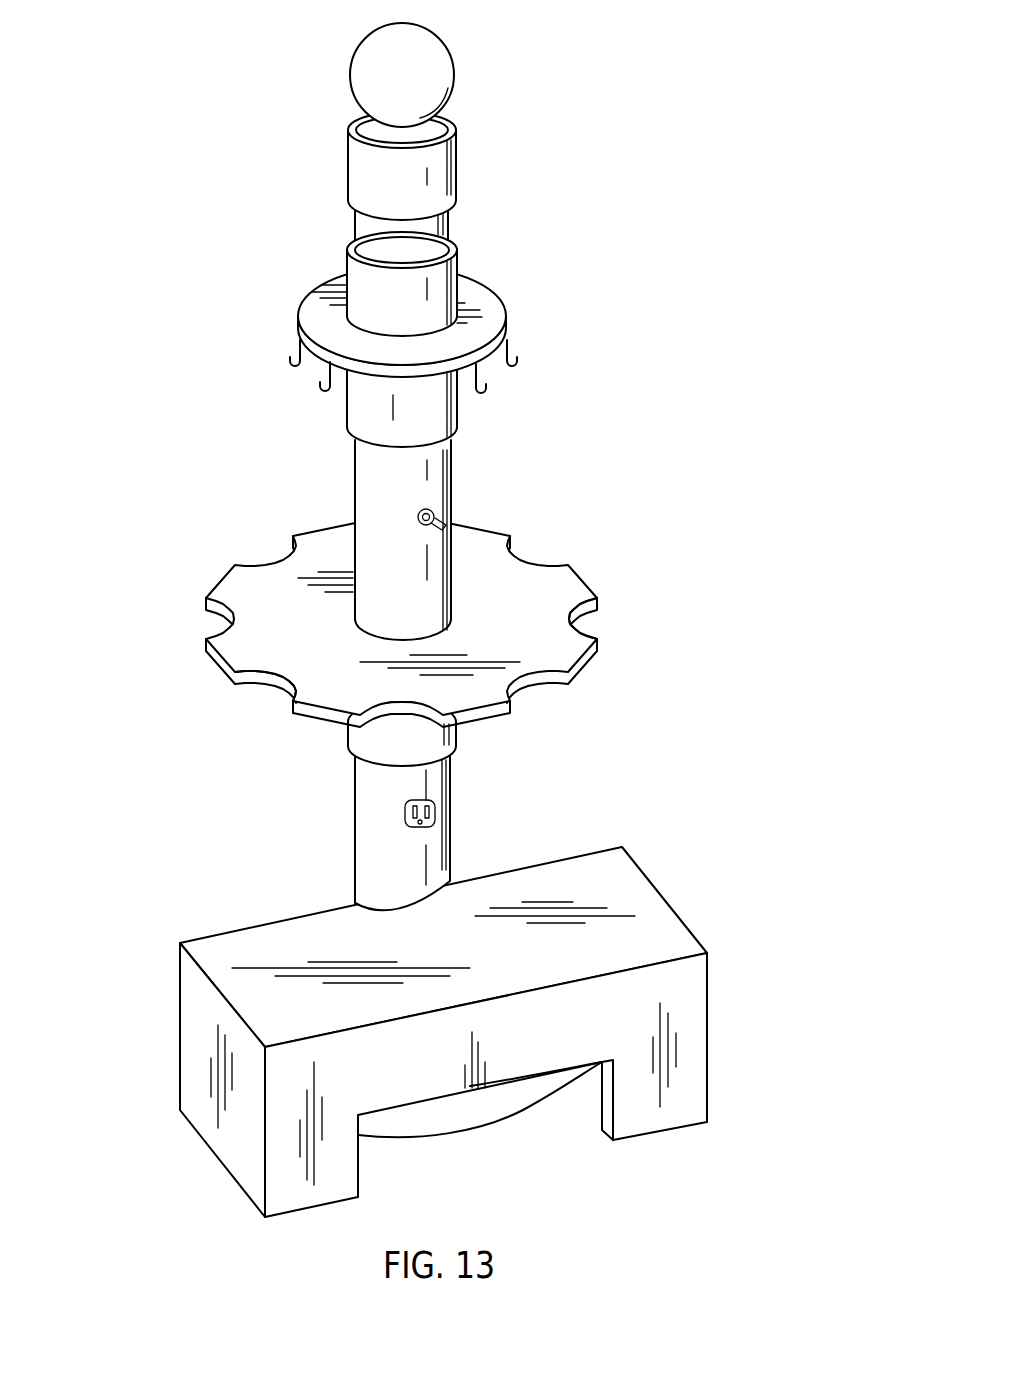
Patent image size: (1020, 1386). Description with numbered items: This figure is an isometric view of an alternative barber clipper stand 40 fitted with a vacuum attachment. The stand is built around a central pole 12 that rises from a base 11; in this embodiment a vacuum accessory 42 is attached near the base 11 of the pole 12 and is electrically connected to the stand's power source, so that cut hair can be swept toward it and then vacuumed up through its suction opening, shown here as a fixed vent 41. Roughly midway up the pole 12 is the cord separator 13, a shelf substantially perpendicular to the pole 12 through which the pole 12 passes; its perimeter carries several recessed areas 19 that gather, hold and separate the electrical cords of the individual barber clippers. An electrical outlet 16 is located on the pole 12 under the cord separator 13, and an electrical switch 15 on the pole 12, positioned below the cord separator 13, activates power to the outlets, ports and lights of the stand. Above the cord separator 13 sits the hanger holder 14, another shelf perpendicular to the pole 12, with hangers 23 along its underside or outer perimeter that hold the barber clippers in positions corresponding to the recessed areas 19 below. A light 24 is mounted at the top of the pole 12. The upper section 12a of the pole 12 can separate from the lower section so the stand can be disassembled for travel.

The barber clipper stand 40 is at (185, 150).
The light 24 is at (427, 72).
The hanger holder 14 is at (493, 284).
The hanger 23 is at (508, 365).
The upper section of pole 12a is at (440, 476).
The electrical switch 15 is at (392, 534).
The recessed area 19 is at (576, 545).
The cord separator 13 is at (597, 580).
The electrical outlet 16 is at (447, 823).
The pole 12 is at (450, 848).
The vacuum accessory 42 is at (660, 893).
The base 11 is at (508, 1120).
The fixed vent 41 is at (541, 1183).